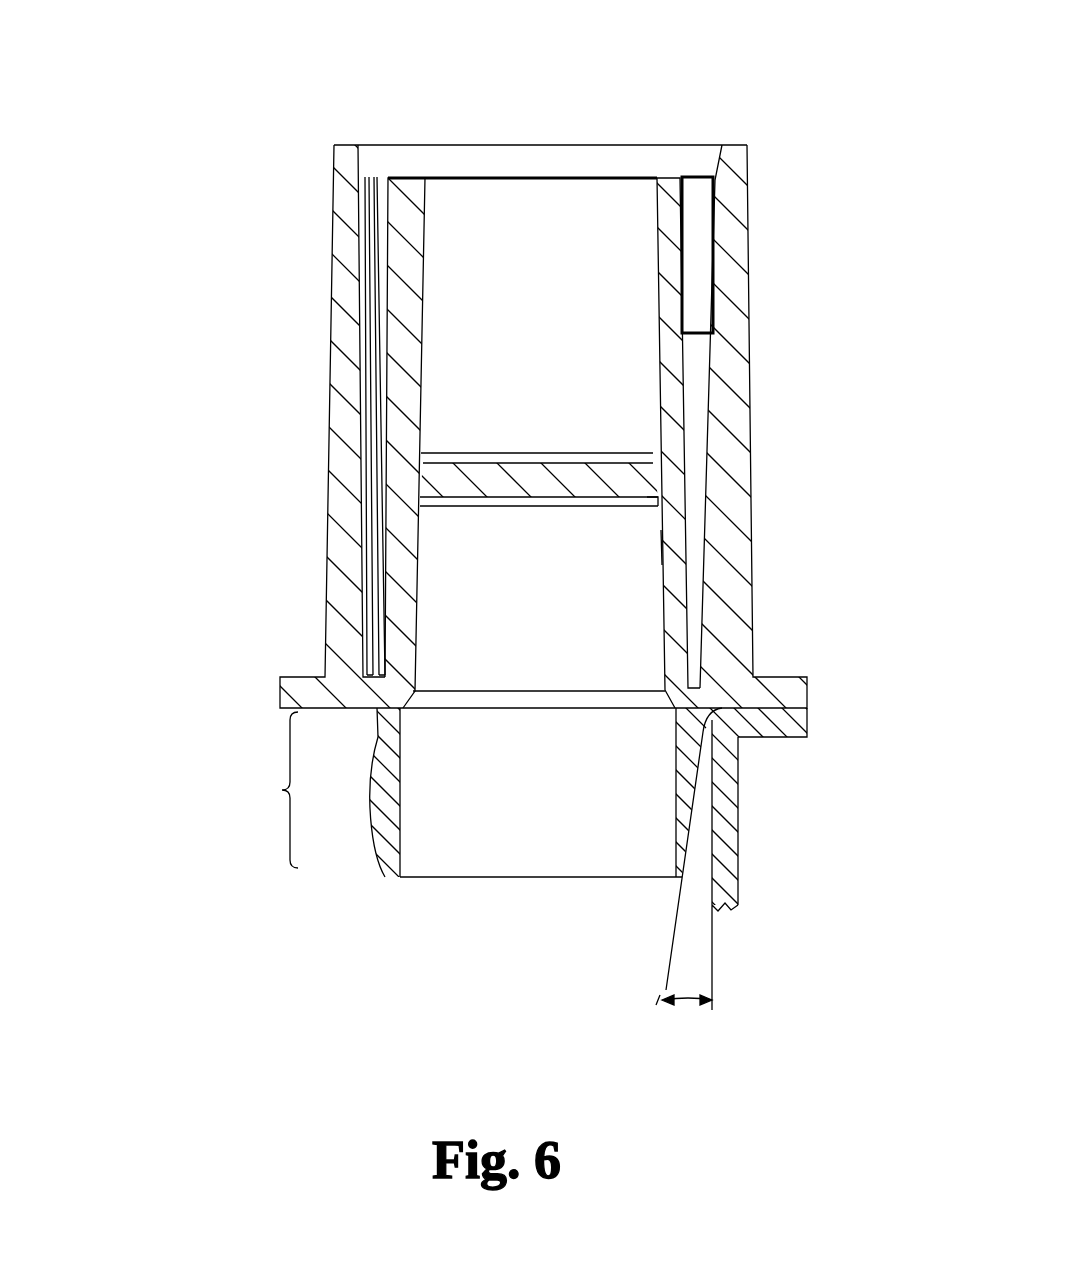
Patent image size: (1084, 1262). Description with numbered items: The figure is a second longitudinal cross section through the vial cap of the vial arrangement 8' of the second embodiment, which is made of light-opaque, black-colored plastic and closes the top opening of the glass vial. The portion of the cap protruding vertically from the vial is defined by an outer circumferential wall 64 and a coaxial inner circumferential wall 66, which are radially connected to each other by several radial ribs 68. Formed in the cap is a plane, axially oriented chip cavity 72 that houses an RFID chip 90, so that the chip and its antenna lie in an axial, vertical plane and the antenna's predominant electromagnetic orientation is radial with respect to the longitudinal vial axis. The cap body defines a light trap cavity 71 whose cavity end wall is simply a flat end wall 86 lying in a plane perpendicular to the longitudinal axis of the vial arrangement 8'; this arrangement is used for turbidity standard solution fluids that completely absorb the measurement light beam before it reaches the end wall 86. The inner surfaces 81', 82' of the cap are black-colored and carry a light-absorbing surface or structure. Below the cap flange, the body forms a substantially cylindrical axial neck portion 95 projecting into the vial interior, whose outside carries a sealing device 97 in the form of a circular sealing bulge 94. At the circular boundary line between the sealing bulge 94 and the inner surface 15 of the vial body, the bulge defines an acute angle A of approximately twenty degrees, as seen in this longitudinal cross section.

The vial arrangement 8' is at (542, 513).
The outer circumferential wall 64 is at (345, 132).
The inner circumferential wall 66 is at (405, 176).
The radial ribs 68 is at (378, 218).
The chip cavity 72 is at (708, 230).
The RFID chip 90 is at (698, 195).
The flat end wall 86 is at (573, 477).
The inner surface 81' is at (741, 514).
The inner surface 82' is at (767, 572).
The light trap cavity 71 is at (579, 850).
The inner surface of the vial body 15 is at (660, 878).
The circular sealing bulge 94 is at (696, 792).
The sealing device 97 is at (710, 850).
The axial neck portion 95 is at (257, 790).
The acute angle A is at (688, 992).